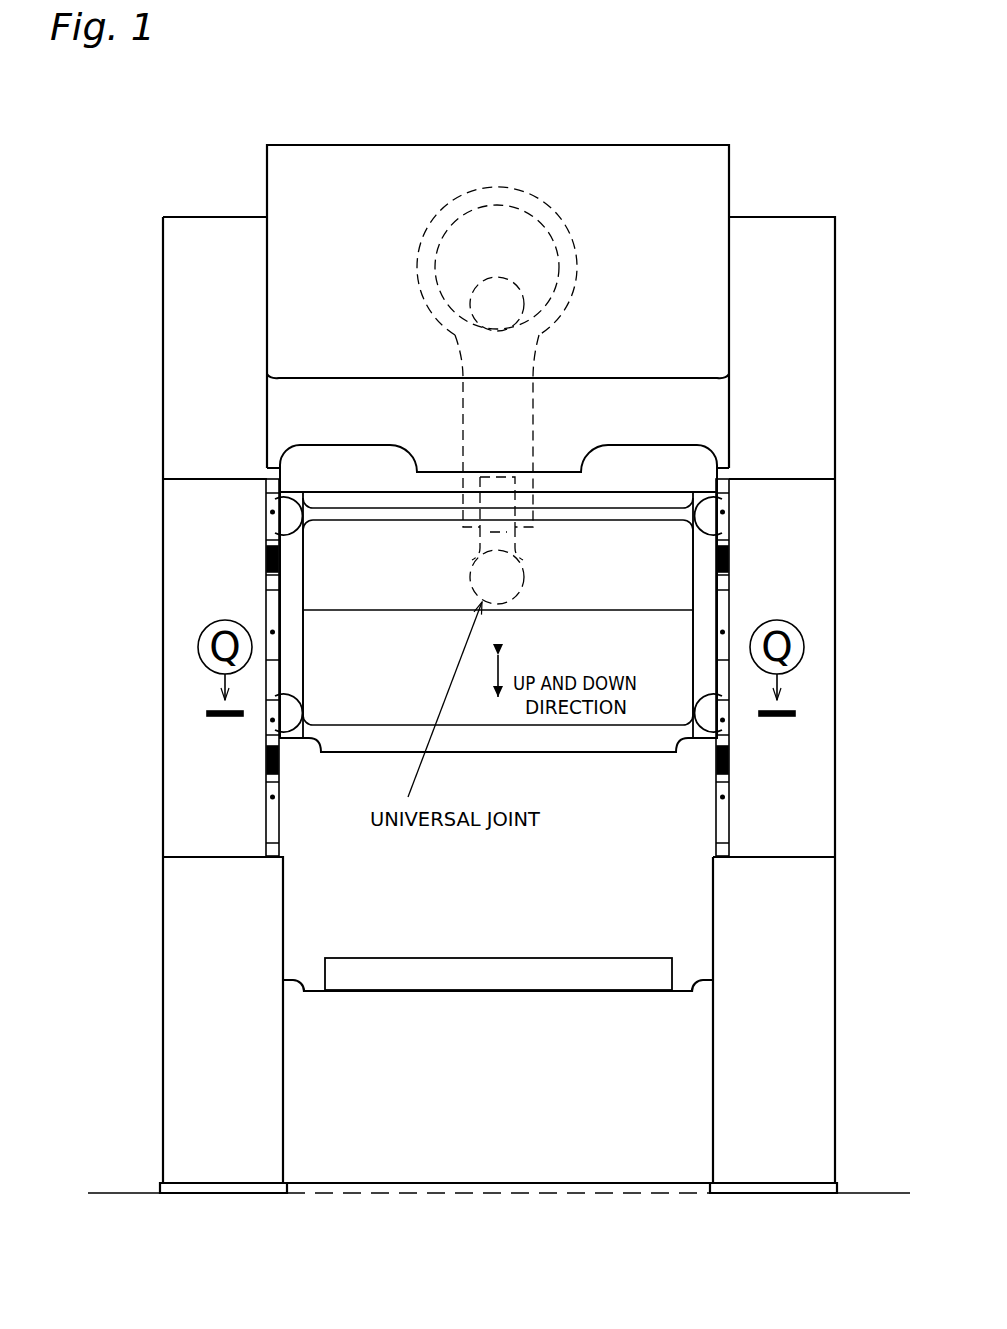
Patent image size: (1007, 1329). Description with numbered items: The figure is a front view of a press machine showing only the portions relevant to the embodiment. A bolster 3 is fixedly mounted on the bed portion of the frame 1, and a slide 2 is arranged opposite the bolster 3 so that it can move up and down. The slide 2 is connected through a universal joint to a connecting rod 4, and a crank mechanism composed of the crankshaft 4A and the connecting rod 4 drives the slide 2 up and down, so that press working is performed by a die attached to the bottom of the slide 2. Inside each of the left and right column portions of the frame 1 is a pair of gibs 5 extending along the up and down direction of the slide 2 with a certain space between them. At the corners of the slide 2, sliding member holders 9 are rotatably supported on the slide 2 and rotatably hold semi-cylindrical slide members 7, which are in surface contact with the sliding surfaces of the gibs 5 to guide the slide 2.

The frame 1 is at (797, 563).
The slide 2 is at (657, 556).
The bolster 3 is at (645, 977).
The connecting rod 4 is at (502, 355).
The crankshaft 4A is at (518, 242).
The gibs 5 is at (257, 552).
The slide members 7 is at (263, 500).
The sliding member holders 9 is at (290, 538).